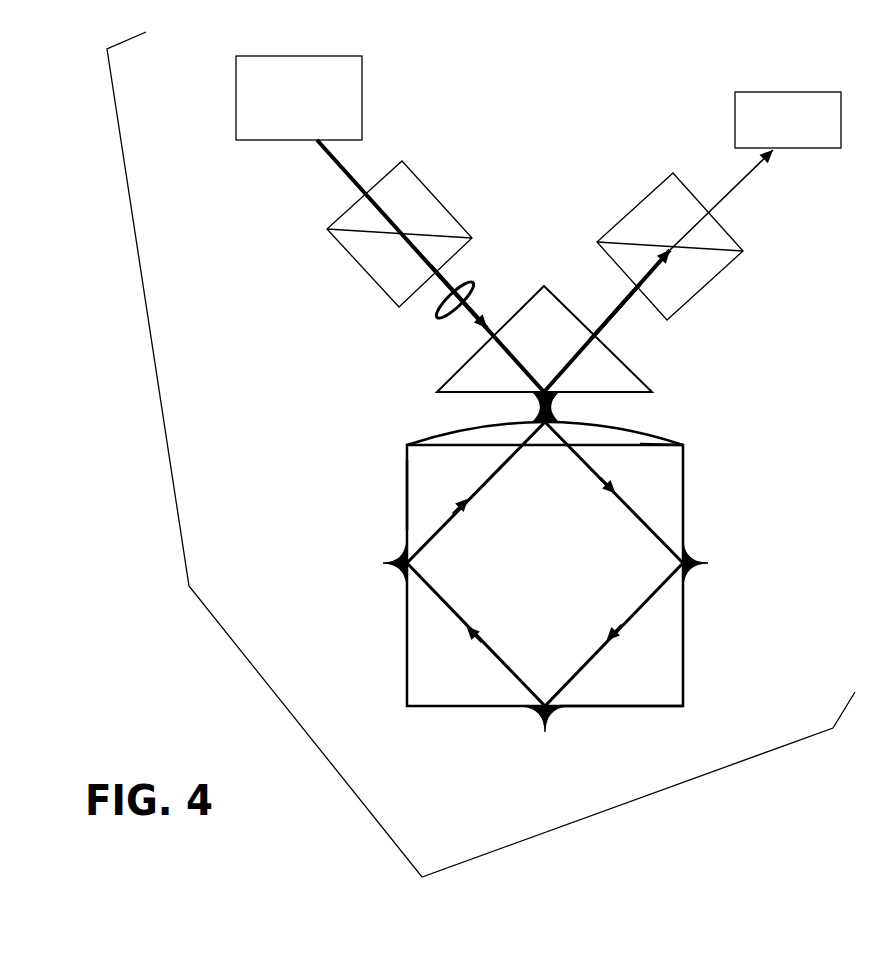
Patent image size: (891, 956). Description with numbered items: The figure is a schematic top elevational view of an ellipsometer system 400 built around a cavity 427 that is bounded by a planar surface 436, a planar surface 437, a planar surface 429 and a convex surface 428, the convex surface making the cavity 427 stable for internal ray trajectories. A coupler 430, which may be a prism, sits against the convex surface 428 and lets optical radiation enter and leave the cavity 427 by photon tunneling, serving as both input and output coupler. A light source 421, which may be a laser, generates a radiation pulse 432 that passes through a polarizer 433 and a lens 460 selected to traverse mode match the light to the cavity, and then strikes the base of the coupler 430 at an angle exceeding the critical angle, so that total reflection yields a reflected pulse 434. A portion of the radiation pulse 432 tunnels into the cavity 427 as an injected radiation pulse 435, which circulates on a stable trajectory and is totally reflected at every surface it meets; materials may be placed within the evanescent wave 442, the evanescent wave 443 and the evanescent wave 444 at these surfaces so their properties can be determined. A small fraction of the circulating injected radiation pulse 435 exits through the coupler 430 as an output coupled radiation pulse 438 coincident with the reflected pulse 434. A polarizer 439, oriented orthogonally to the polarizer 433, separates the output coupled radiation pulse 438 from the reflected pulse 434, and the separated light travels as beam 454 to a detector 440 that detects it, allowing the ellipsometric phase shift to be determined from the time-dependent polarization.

The ellipsometer system 400 is at (187, 588).
The light source 421 is at (364, 100).
The radiation pulse 432 is at (350, 180).
The polarizer 433 is at (383, 292).
The lens 460 is at (473, 280).
The coupler 430 is at (452, 377).
The reflected pulse 434 is at (613, 310).
The output coupled radiation pulse 438 is at (610, 322).
The polarizer 439 is at (710, 285).
The detected beam 454 is at (740, 180).
The detector 440 is at (823, 150).
The convex surface 428 is at (428, 438).
The cavity 427 is at (683, 445).
The planar surface 429 is at (685, 655).
The planar surface 437 is at (407, 487).
The injected radiation pulse 435 is at (640, 517).
The evanescent wave 443 is at (398, 573).
The evanescent wave 444 is at (708, 565).
The evanescent wave 442 is at (537, 716).
The planar surface 436 is at (588, 708).